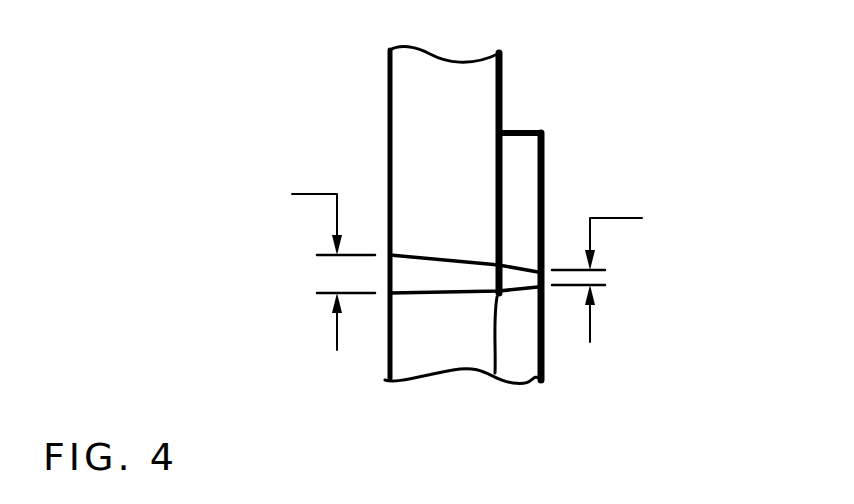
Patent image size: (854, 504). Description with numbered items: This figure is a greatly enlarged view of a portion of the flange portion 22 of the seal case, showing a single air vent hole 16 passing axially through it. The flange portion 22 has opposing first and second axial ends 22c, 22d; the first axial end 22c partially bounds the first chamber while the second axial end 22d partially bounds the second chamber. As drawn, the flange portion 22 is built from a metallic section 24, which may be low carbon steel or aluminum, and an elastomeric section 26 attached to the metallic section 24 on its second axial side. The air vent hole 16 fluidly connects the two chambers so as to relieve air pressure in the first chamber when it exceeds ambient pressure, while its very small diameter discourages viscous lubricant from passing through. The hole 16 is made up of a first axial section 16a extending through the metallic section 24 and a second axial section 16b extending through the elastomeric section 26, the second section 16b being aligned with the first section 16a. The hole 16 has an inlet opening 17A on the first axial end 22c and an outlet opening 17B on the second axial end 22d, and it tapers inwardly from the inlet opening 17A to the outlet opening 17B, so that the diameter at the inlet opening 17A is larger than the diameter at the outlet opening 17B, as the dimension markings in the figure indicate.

The air vent hole 16 is at (461, 272).
The first axial section 16a is at (435, 253).
The second axial section 16b is at (520, 290).
The inlet opening 17A is at (387, 272).
The outlet opening 17B is at (538, 277).
The flange portion 22 is at (546, 90).
The first axial end 22c is at (387, 115).
The second axial end 22d is at (503, 70).
The metallic section 24 is at (405, 98).
The elastomeric section 26 is at (530, 170).